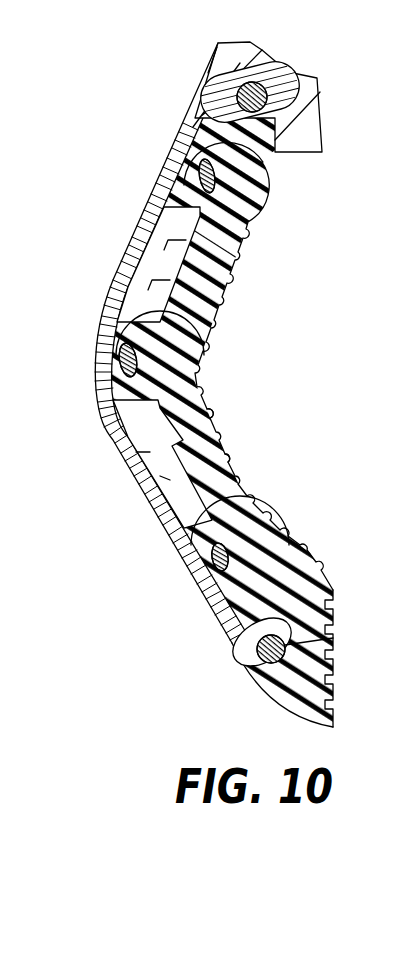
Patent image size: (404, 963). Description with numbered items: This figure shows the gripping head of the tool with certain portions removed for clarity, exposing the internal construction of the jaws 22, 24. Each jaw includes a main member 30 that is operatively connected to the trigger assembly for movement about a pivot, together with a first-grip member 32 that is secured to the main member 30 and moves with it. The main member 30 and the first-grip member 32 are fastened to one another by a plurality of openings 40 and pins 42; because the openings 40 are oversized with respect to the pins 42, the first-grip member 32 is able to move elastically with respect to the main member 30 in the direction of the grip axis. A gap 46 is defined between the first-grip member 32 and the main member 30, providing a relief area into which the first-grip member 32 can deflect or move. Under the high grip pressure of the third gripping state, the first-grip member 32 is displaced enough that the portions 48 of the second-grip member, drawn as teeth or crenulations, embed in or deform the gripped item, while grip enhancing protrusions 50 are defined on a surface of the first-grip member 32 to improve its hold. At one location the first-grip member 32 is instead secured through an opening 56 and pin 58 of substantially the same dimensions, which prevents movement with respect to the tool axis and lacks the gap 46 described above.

The jaw 22 is at (130, 343).
The jaw 24 is at (120, 177).
The main member 30 is at (193, 116).
The first-grip member 32 is at (203, 368).
The opening 40 is at (266, 182).
The pin 42 is at (203, 165).
The gap 46 is at (180, 243).
The portions of second-grip member 48 is at (230, 444).
The grip enhancing protrusions 50 is at (212, 407).
The opening 56 is at (333, 640).
The pin 58 is at (262, 656).